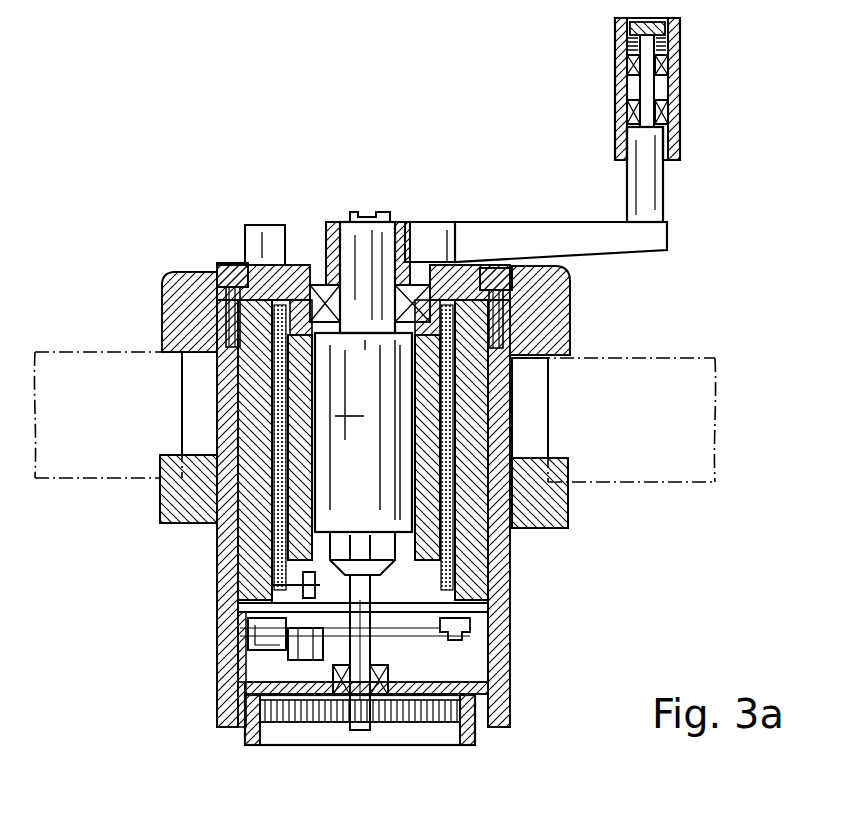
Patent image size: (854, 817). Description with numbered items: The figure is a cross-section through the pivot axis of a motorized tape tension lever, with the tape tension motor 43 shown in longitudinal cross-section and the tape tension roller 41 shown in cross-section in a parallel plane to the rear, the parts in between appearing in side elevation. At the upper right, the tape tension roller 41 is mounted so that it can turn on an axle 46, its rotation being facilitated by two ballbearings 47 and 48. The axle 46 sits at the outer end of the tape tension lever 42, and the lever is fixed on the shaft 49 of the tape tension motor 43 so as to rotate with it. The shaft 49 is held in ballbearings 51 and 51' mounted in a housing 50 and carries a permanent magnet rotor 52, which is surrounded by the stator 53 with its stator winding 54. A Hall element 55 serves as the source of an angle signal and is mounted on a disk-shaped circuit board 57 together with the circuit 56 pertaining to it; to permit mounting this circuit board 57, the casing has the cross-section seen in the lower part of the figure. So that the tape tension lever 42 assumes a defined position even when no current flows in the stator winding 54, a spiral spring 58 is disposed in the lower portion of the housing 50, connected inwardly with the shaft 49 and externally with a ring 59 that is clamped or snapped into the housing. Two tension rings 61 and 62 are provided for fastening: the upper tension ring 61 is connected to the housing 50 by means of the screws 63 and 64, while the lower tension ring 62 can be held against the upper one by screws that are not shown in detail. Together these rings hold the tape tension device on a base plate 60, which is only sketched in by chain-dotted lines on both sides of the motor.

The tape tension roller 41 is at (618, 70).
The tape tension lever 42 is at (598, 232).
The tape tension motor 43 is at (560, 345).
The axle 46 is at (654, 188).
The ballbearing 47 is at (670, 68).
The ballbearing 48 is at (670, 110).
The shaft 49 is at (366, 214).
The housing 50 is at (330, 262).
The ballbearing 51 is at (388, 248).
The ballbearing 51' is at (390, 666).
The permanent magnet rotor 52 is at (364, 454).
The stator 53 is at (488, 378).
The stator winding 54 is at (486, 598).
The Hall element 55 is at (278, 590).
The circuit 56 is at (303, 652).
The circuit board 57 is at (466, 636).
The spiral spring 58 is at (335, 730).
The ring 59 is at (478, 742).
The base plate 60 is at (103, 370).
The upper tension ring 61 is at (185, 290).
The lower tension ring 62 is at (167, 500).
The screw 63 is at (232, 278).
The screw 64 is at (545, 298).